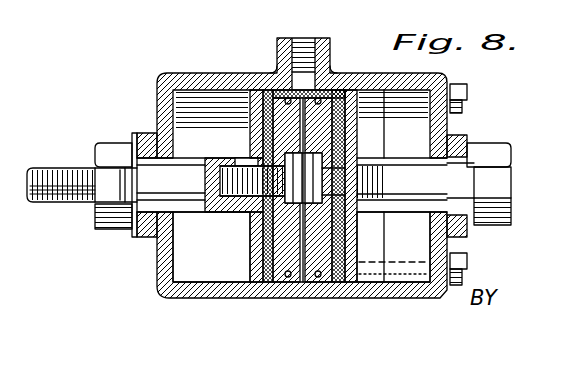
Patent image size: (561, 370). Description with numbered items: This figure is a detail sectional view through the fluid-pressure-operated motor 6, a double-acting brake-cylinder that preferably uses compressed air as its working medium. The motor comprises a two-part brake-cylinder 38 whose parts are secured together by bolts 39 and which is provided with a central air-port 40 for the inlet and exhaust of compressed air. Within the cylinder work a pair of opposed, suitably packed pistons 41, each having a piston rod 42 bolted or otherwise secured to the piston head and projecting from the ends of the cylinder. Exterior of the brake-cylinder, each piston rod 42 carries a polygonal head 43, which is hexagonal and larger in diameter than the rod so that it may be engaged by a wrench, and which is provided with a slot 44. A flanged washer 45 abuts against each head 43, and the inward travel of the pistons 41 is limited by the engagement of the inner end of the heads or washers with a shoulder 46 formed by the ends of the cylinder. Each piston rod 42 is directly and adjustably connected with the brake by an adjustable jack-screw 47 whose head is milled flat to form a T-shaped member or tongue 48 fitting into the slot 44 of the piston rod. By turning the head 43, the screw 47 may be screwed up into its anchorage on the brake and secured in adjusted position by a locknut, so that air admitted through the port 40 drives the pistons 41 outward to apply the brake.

The fluid-pressure-operated motor 6 is at (187, 76).
The two-part brake-cylinder 38 is at (212, 288).
The bolts 39 is at (468, 92).
The central air-port 40 is at (302, 50).
The pistons 41 is at (269, 283).
The piston rods 42 is at (203, 213).
The polygonal heads 43 is at (100, 148).
The slots 44 is at (112, 228).
The flanged washer 45 is at (142, 133).
The shoulder 46 is at (152, 238).
The adjustable jack-screw 47 is at (55, 203).
The T-shaped member or tongue 48 is at (104, 190).